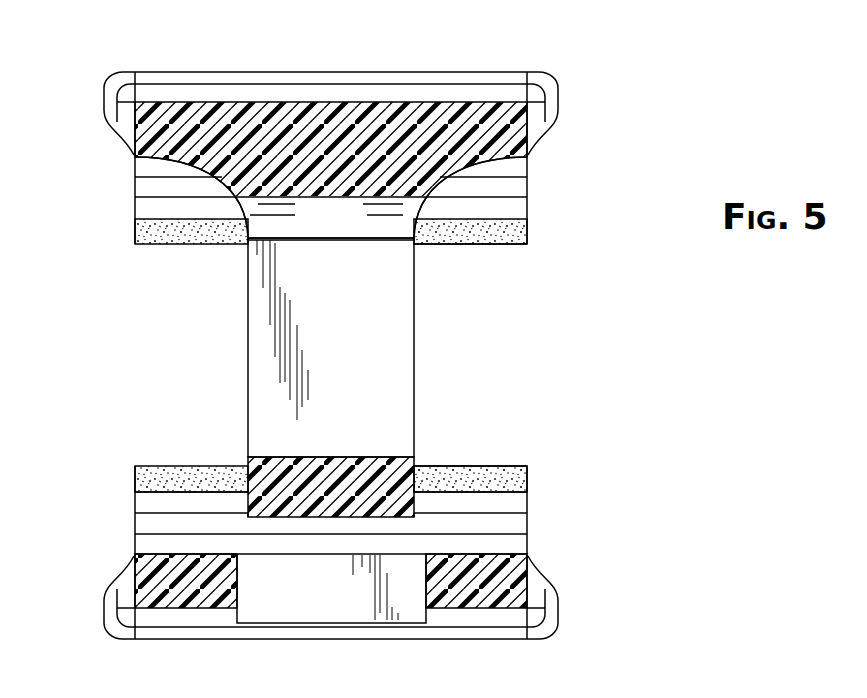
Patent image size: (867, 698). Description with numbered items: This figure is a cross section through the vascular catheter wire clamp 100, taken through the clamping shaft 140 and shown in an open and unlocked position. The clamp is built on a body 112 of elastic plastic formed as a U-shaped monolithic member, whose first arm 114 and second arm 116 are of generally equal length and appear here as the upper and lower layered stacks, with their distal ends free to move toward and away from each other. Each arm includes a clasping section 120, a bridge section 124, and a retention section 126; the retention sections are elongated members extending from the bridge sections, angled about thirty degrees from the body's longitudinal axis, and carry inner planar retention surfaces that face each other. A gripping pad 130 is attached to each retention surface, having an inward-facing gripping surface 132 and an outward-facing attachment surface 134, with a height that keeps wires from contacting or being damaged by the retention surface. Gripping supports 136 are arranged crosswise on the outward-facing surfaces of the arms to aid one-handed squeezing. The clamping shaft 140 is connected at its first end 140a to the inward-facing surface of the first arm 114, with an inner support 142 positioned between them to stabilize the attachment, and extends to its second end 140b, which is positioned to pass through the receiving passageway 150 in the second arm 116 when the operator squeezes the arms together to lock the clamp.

The vascular catheter wire clamp 100 is at (600, 97).
The body 112 is at (504, 72).
The first arm 114 is at (122, 177).
The second arm 116 is at (122, 546).
The clasping section 120 is at (197, 72).
The bridge section 124 is at (527, 163).
The retention section 126 is at (527, 220).
The gripping pad 130 is at (508, 248).
The gripping surface 132 is at (507, 490).
The attachment surface 134 is at (453, 246).
The gripping supports 136 is at (300, 72).
The clamping shaft 140 is at (352, 344).
The first end 140a is at (358, 229).
The second end 140b is at (248, 464).
The inner support 142 is at (207, 158).
The receiving passageway 150 is at (302, 608).